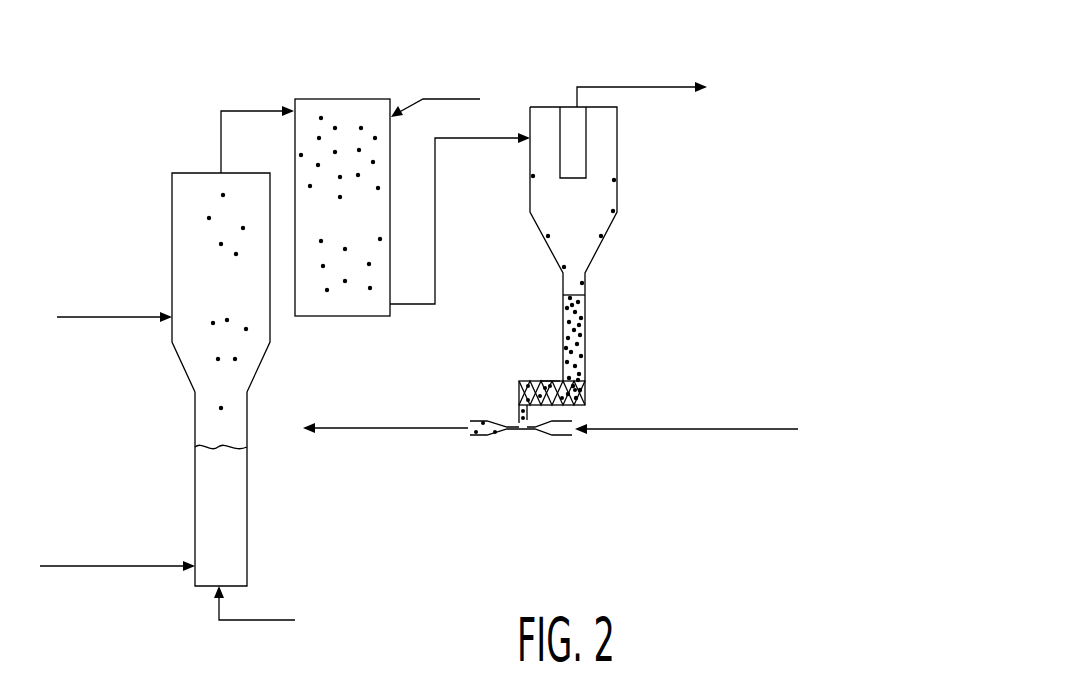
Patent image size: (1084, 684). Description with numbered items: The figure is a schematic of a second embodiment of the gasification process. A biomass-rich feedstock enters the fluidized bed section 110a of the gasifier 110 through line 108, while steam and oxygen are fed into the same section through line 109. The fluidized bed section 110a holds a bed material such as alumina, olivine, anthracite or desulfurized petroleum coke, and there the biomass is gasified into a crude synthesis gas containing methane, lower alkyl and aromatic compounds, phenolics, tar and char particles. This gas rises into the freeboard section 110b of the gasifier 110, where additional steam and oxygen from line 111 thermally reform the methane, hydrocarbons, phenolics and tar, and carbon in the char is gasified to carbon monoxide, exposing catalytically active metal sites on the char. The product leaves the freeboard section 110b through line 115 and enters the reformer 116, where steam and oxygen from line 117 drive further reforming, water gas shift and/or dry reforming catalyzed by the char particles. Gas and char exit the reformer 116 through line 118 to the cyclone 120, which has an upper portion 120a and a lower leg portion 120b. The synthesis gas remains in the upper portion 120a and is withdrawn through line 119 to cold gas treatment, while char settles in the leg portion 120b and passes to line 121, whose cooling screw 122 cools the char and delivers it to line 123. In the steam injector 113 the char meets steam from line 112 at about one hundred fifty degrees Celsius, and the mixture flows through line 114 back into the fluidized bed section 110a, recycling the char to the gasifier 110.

The line 108 is at (132, 566).
The line 109 is at (243, 620).
The gasifier 110 is at (168, 378).
The fluidized bed section 110a is at (203, 474).
The freeboard section 110b is at (177, 190).
The line 111 is at (131, 317).
The line 112 is at (728, 431).
The steam injector 113 is at (565, 432).
The line 114 is at (356, 425).
The line 115 is at (240, 110).
The reformer 116 is at (293, 137).
The line 117 is at (412, 97).
The line 118 is at (435, 242).
The line 119 is at (622, 86).
The cyclone 120 is at (615, 253).
The upper portion 120a is at (612, 162).
The leg portion 120b is at (587, 323).
The line 121 is at (573, 413).
The cooling screw 122 is at (548, 380).
The line 123 is at (517, 417).